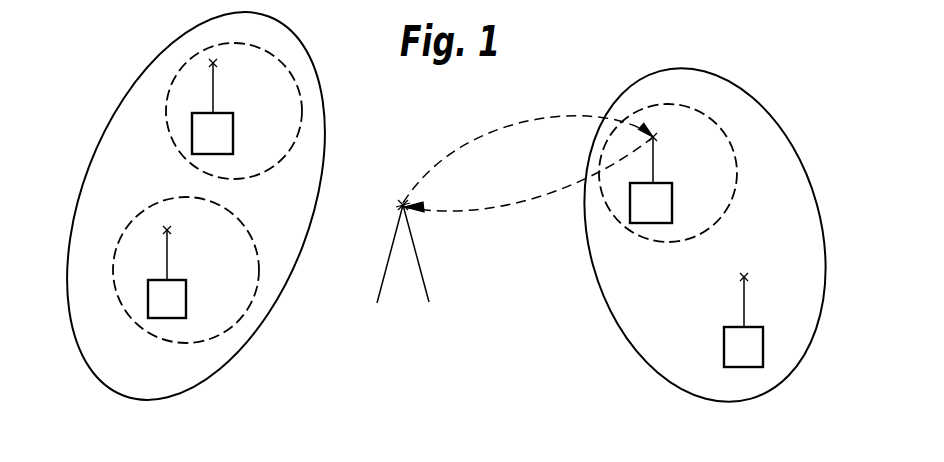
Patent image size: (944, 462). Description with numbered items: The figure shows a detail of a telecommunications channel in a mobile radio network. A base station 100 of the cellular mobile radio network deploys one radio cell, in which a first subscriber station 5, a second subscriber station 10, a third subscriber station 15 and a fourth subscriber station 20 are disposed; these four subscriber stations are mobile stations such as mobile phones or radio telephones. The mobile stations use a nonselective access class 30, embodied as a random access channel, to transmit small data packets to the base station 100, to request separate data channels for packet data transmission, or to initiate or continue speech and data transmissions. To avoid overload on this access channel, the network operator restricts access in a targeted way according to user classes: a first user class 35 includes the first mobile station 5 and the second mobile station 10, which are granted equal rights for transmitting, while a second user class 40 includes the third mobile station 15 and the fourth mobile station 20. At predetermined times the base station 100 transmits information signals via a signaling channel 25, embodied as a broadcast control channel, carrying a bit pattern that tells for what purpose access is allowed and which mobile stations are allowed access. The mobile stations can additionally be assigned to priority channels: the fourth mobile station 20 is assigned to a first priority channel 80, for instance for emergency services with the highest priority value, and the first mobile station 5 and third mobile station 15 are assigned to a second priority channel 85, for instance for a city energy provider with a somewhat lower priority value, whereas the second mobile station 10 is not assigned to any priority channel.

The first subscriber station 5 is at (667, 203).
The second subscriber station 10 is at (733, 343).
The third subscriber station 15 is at (222, 137).
The fourth subscriber station 20 is at (175, 300).
The signaling channel 25 is at (453, 148).
The nonselective access class 30 is at (488, 213).
The first user class 35 is at (615, 305).
The second user class 40 is at (220, 360).
The first priority channel 80 is at (252, 292).
The second priority channel 85 is at (270, 57).
The base station 100 is at (402, 283).